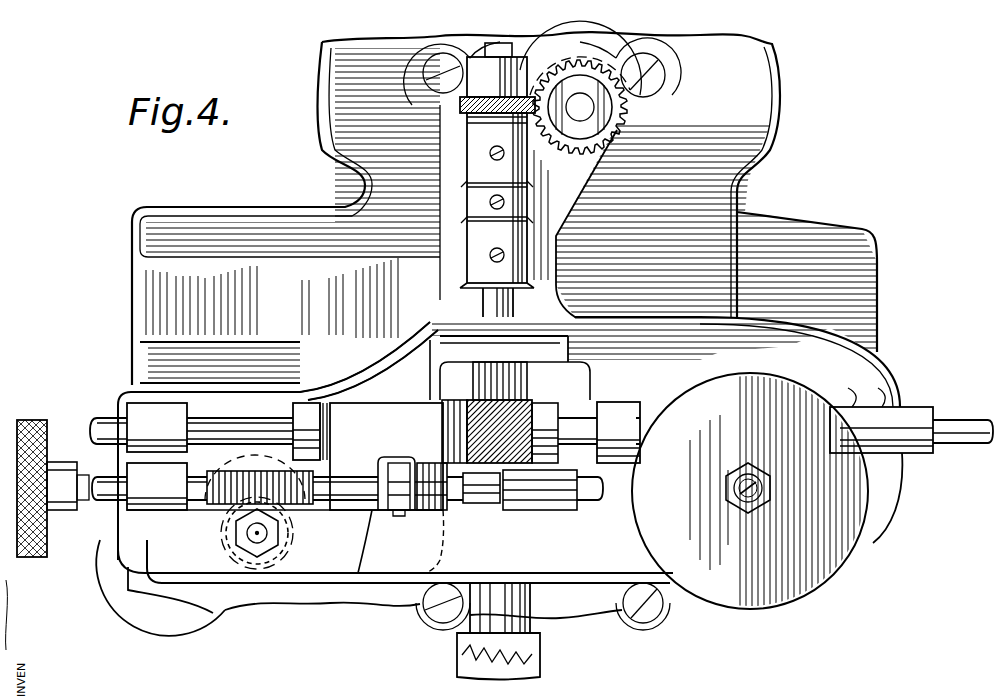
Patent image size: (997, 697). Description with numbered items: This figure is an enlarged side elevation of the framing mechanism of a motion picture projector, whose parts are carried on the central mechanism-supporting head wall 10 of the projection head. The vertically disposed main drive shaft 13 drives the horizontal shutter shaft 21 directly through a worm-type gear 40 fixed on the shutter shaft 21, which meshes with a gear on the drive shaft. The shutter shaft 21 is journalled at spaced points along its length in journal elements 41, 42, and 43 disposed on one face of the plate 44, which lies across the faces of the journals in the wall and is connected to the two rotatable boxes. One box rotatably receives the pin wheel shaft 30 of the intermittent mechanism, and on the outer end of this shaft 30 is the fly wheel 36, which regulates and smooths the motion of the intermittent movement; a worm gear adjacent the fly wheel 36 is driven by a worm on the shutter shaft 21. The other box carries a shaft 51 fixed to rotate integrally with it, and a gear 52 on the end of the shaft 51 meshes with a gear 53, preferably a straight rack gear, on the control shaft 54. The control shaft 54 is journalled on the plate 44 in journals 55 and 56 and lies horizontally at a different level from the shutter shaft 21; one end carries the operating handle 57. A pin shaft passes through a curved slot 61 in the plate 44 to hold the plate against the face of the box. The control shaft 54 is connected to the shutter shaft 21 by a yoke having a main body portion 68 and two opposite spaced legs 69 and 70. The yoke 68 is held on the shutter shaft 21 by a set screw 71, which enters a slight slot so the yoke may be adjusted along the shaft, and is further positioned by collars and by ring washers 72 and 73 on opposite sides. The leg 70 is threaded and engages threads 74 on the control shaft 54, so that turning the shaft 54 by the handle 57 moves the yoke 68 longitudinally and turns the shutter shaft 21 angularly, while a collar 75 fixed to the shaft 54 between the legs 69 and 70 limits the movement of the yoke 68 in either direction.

The head wall 10 is at (528, 350).
The main drive shaft 13 is at (512, 298).
The shutter shaft 21 is at (214, 425).
The pin wheel shaft 30 is at (758, 472).
The fly wheel 36 is at (504, 440).
The gear 40 is at (507, 376).
The journal element 41 is at (850, 407).
The journal element 42 is at (618, 410).
The journal element 43 is at (157, 427).
The plate 44 is at (565, 370).
The shaft 51 is at (268, 533).
The gear 52 is at (280, 543).
The gear 53 is at (250, 472).
The control shaft 54 is at (485, 505).
The journal 55 is at (310, 489).
The journal 56 is at (545, 510).
The operating handle 57 is at (255, 456).
The curved slot 61 is at (230, 538).
The yoke member 68 is at (386, 456).
The leg 69 is at (360, 514).
The leg 70 is at (430, 512).
The set screw 71 is at (312, 395).
The ring washer 72 is at (326, 402).
The ring washer 73 is at (443, 410).
The threads 74 is at (416, 472).
The collar 75 is at (403, 516).